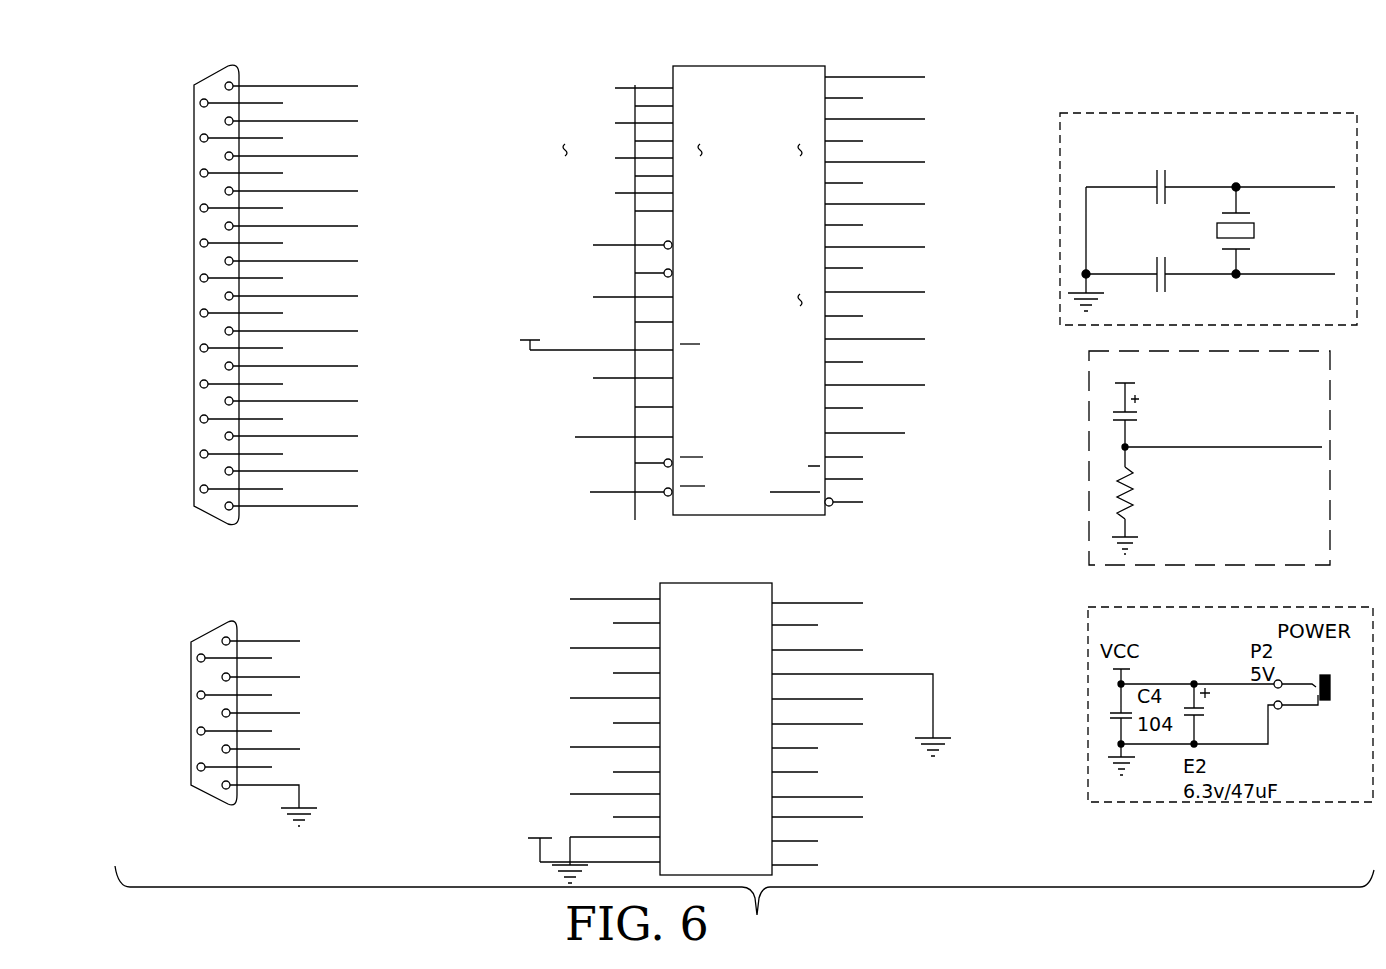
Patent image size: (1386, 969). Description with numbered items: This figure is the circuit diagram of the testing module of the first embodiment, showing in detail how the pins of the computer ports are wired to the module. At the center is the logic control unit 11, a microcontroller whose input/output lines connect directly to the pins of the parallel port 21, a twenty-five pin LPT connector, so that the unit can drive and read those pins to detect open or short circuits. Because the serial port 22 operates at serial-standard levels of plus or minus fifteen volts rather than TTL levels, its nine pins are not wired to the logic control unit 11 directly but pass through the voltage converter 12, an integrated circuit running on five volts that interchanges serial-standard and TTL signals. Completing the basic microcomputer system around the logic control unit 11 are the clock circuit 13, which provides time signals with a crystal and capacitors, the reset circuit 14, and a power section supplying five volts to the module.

The logic control unit 11 is at (740, 500).
The voltage converter 12 is at (758, 592).
The clock circuit 13 is at (1073, 178).
The reset circuit 14 is at (1089, 532).
The parallel port 21 is at (198, 359).
The serial port 22 is at (225, 798).